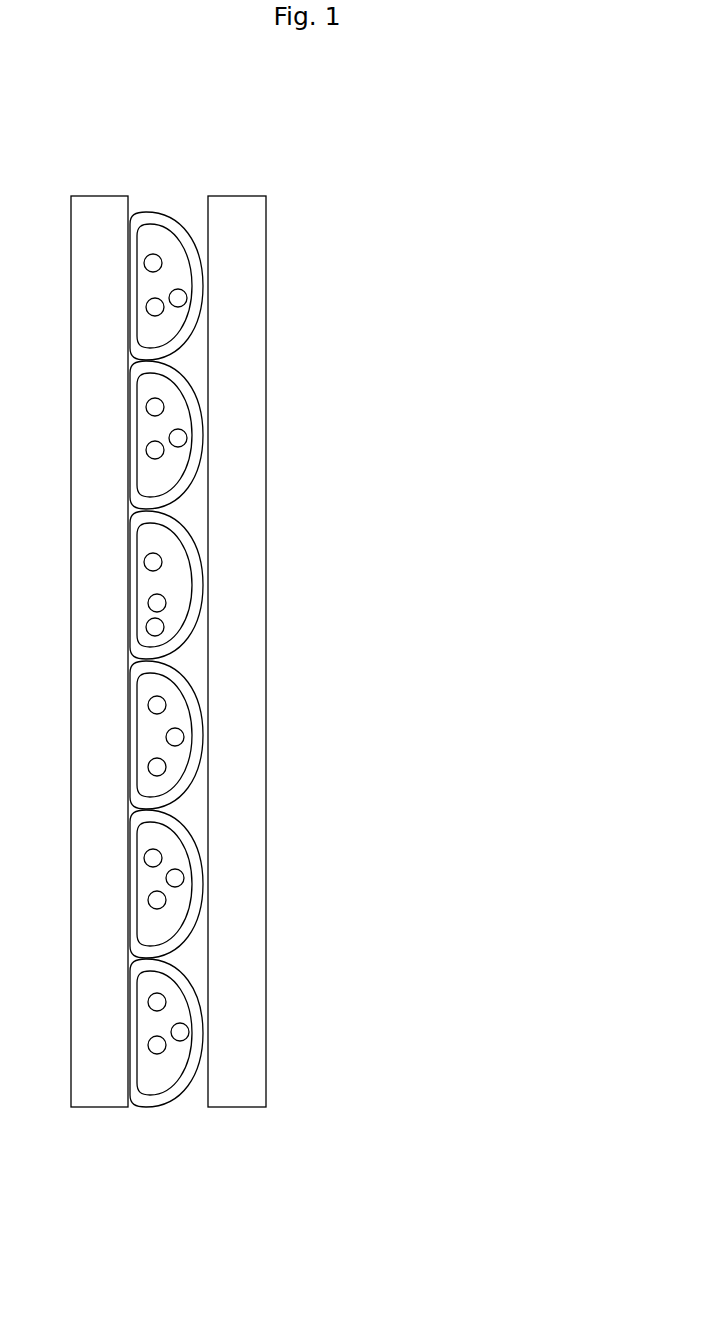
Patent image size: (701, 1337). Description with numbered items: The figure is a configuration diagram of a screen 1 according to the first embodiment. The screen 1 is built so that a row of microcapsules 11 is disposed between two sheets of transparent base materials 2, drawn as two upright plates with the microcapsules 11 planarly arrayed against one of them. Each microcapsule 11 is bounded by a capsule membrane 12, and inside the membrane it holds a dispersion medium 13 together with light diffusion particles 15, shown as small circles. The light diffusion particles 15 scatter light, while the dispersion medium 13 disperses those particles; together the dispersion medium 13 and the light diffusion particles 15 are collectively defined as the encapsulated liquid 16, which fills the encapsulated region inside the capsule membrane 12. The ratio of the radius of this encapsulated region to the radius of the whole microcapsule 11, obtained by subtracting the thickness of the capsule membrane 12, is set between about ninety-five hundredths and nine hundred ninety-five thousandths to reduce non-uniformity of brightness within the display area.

The screen 1 is at (80, 162).
The transparent base material 2 is at (107, 1107).
The microcapsule 11 is at (197, 262).
The capsule membrane 12 is at (197, 563).
The dispersion medium 13 is at (175, 407).
The light diffusion particle 15 is at (182, 437).
The encapsulated liquid 16 is at (323, 401).